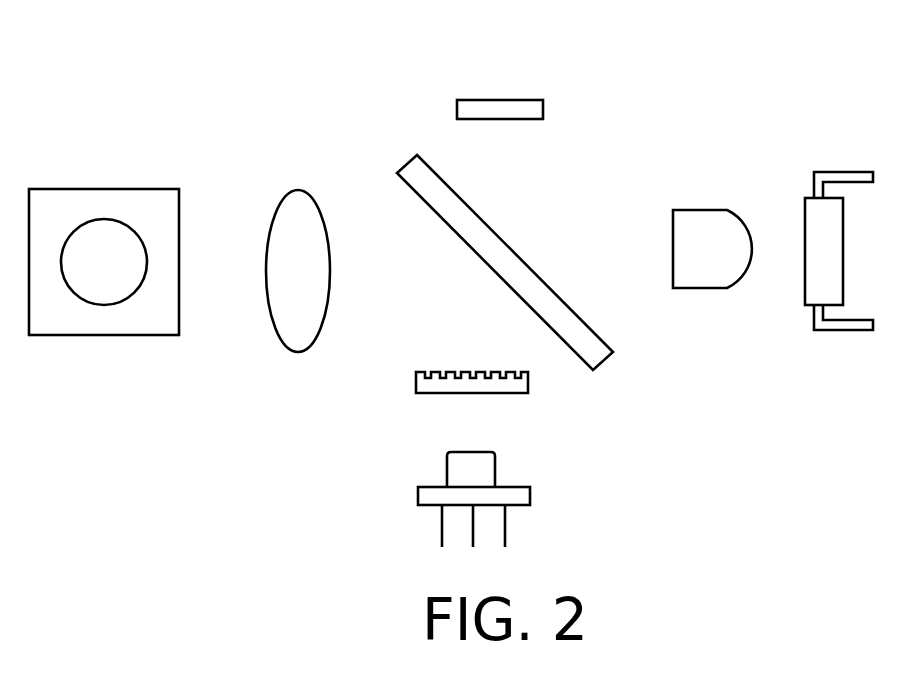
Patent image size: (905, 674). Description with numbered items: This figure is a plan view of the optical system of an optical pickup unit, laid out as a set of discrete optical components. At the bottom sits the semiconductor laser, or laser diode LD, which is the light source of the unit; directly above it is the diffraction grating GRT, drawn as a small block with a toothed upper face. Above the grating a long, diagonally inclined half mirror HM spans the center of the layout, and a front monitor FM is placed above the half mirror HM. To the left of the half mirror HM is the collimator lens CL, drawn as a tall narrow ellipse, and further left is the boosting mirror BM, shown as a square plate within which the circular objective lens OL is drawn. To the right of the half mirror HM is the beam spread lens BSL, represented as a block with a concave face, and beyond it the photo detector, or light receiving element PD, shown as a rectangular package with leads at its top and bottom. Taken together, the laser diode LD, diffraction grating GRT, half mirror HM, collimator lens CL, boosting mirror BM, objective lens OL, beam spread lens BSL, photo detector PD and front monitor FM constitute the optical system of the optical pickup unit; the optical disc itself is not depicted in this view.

The boosting mirror BM is at (113, 203).
The objective lens OL is at (107, 287).
The collimator lens CL is at (268, 303).
The half mirror HM is at (408, 163).
The front monitor FM is at (493, 100).
The diffraction grating GRT is at (528, 379).
The semiconductor laser (laser diode) LD is at (530, 493).
The beam spread lens BSL is at (692, 210).
The photo detector (light receiving element) PD is at (813, 265).